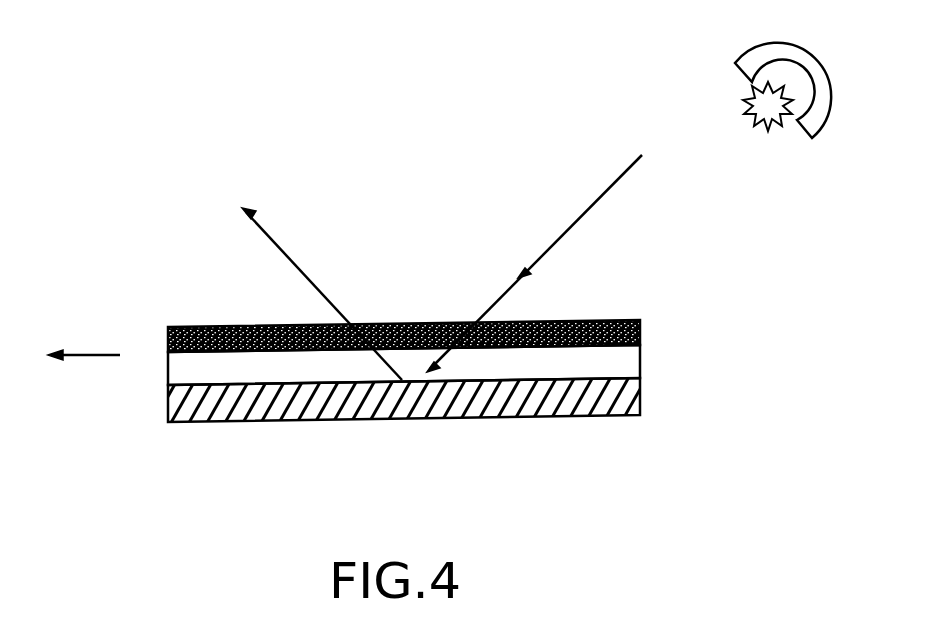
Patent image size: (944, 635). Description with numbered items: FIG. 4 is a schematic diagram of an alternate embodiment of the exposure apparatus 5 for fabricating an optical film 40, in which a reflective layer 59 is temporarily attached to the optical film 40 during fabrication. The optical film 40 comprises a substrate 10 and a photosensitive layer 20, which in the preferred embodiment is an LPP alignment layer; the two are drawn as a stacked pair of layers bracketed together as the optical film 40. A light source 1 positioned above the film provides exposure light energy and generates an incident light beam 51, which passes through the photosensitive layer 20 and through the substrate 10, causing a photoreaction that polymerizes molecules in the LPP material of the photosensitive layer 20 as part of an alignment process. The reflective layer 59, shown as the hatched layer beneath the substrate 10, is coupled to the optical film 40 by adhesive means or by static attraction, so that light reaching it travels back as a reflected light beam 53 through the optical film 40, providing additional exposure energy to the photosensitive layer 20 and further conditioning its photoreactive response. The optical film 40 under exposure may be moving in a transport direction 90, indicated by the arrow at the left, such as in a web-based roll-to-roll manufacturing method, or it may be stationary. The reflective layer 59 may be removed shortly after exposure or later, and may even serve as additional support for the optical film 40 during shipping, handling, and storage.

The light source 1 is at (840, 116).
The exposure apparatus 5 is at (532, 53).
The substrate 10 is at (458, 360).
The photosensitive layer 20 is at (662, 326).
The optical film 40 is at (493, 333).
The incident light beam 51 is at (650, 149).
The reflected light beam 53 is at (374, 384).
The reflective layer 59 is at (226, 419).
The transport direction 90 is at (72, 333).